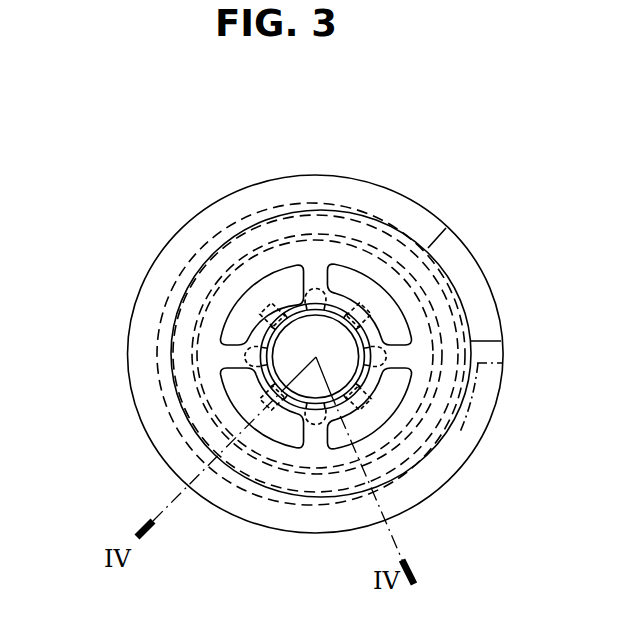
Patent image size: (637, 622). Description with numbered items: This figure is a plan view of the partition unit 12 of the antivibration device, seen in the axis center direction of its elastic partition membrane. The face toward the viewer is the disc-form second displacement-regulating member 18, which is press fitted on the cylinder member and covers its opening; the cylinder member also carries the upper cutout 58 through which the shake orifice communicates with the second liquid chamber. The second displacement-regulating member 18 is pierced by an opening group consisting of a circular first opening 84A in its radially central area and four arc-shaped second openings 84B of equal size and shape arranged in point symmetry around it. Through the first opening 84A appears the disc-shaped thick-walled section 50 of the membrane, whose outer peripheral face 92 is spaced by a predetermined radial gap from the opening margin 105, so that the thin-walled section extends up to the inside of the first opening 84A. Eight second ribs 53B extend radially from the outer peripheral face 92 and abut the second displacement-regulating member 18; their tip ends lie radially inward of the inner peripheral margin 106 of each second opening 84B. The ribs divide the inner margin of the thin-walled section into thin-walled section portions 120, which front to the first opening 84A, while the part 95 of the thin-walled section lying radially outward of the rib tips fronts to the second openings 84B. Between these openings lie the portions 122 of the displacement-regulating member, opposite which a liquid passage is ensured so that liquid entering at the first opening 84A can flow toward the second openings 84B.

The partition unit 12 is at (476, 212).
The second displacement-regulating member 18 is at (440, 390).
The thick-walled section 50 is at (353, 349).
The second ribs 53B is at (377, 385).
The upper cutout 58 is at (494, 284).
The first opening 84A is at (262, 378).
The second openings 84B is at (247, 287).
The outer peripheral face 92 is at (252, 329).
The part of the thin-walled section 95 is at (247, 310).
The opening margin 105 is at (297, 312).
The inner peripheral margin 106 is at (336, 289).
The thin-walled section portions 120 is at (291, 390).
The portions of the displacement-regulating members 122 is at (420, 434).